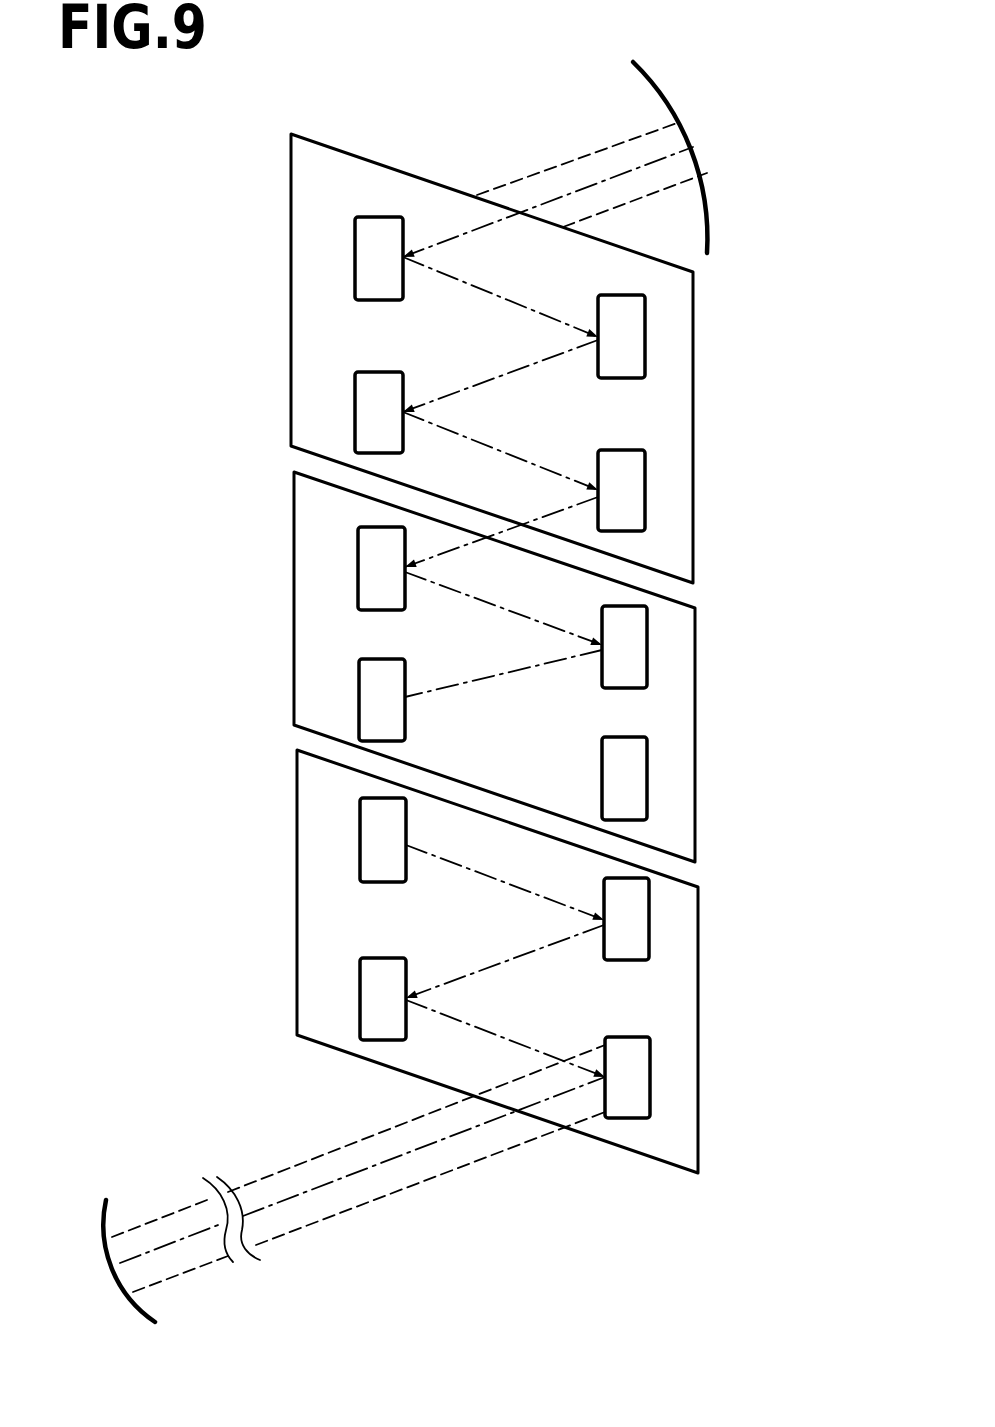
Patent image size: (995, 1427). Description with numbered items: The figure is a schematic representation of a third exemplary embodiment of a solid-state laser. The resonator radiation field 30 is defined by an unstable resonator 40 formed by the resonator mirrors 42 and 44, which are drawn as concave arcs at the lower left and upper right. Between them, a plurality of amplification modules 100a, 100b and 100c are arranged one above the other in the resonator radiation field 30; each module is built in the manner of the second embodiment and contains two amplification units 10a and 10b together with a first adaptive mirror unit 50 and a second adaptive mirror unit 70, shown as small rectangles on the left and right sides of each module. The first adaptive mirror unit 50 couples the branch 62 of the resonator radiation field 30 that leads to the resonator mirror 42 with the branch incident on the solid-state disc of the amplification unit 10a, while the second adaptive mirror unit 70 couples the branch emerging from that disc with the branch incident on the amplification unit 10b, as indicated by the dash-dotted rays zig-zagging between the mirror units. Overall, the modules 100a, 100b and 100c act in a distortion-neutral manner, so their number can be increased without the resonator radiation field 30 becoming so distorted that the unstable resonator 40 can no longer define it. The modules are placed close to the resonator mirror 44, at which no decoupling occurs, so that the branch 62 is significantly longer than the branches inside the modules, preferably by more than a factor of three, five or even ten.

The amplification unit 10a is at (368, 416).
The amplification unit 10b is at (368, 252).
The amplification module 100a is at (314, 918).
The amplification module 100b is at (312, 628).
The amplification module 100c is at (312, 332).
The second adaptive mirror unit 70 is at (627, 352).
The first adaptive mirror unit 50 is at (627, 494).
The resonator 40 is at (600, 146).
The resonator mirror 44 is at (670, 94).
The resonator radiation field 30 is at (428, 1185).
The resonator mirror 42 is at (106, 1222).
The branch 62 is at (297, 1185).